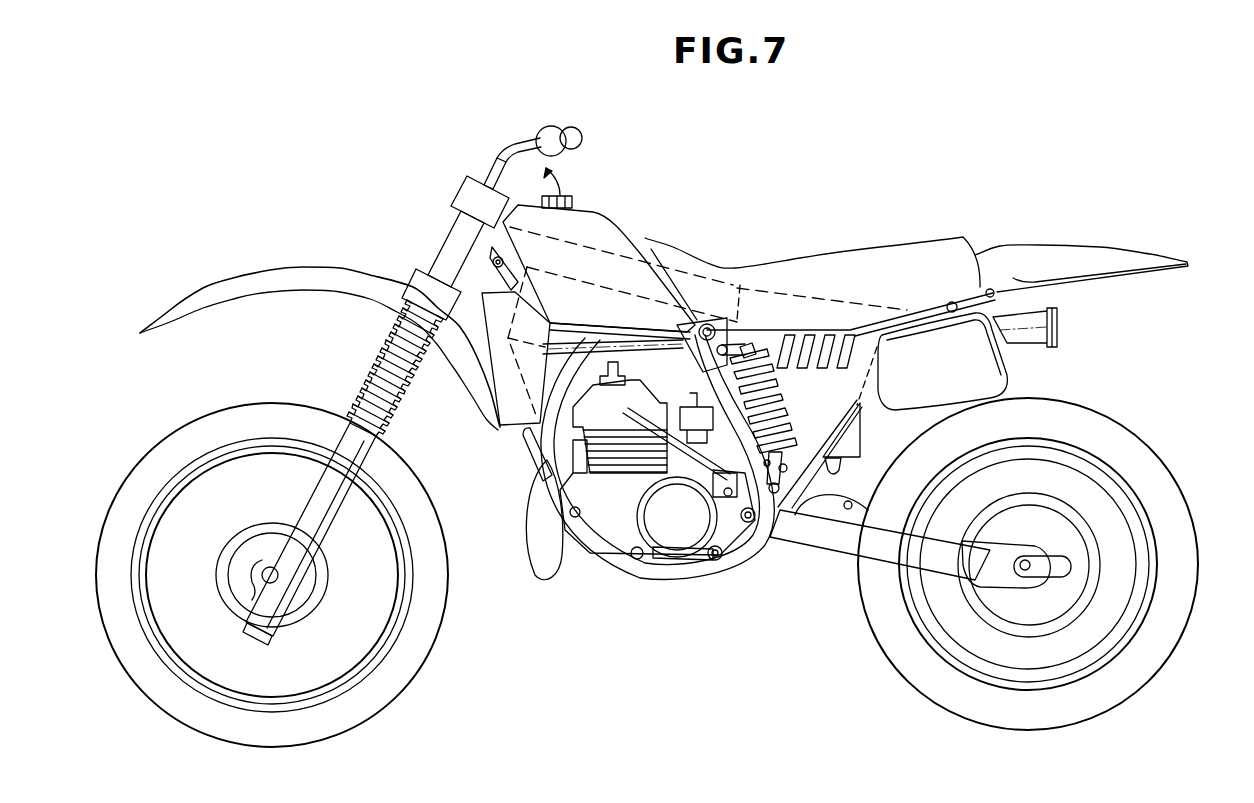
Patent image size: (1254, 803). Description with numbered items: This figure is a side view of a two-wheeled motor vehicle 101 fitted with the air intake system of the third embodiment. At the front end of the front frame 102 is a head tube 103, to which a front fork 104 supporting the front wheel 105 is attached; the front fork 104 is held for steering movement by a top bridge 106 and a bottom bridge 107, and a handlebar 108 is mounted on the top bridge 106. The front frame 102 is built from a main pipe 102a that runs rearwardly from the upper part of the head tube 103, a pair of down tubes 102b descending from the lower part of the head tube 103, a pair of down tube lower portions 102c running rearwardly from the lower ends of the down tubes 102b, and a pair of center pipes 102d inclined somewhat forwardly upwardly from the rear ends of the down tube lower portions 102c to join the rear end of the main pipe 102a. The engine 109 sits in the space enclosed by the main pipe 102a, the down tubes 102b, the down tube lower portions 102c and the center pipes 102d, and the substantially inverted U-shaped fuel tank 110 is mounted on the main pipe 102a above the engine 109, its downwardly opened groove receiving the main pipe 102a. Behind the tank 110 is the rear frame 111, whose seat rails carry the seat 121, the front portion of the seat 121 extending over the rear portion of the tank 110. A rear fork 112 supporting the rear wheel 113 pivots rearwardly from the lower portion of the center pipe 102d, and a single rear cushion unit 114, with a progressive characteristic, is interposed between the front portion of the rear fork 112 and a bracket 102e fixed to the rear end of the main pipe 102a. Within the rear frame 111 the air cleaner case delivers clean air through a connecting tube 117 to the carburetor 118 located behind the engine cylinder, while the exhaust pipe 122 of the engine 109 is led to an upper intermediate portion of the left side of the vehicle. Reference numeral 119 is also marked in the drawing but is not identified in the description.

The two-wheeled motor vehicle 101 is at (664, 208).
The front frame 102 is at (547, 480).
The main pipe 102a is at (622, 277).
The down tubes 102b is at (530, 440).
The down tube lower portions 102c is at (705, 583).
The center pipes 102d is at (818, 470).
The bracket 102e is at (740, 287).
The head tube 103 is at (465, 250).
The front fork 104 is at (323, 515).
The front wheel 105 is at (427, 635).
The top bridge 106 is at (481, 192).
The bottom bridge 107 is at (428, 287).
The handlebar 108 is at (570, 133).
The engine 109 is at (627, 470).
The fuel tank 110 is at (594, 224).
The rear frame 111 is at (880, 378).
The rear fork 112 is at (840, 537).
The rear wheel 113 is at (1180, 528).
The rear cushion unit 114 is at (860, 433).
The connecting tube 117 is at (793, 408).
The carburetor 118 is at (680, 402).
The fuel tank breather tube 119 is at (565, 200).
The seat 121 is at (917, 257).
The exhaust pipe 122 is at (553, 580).